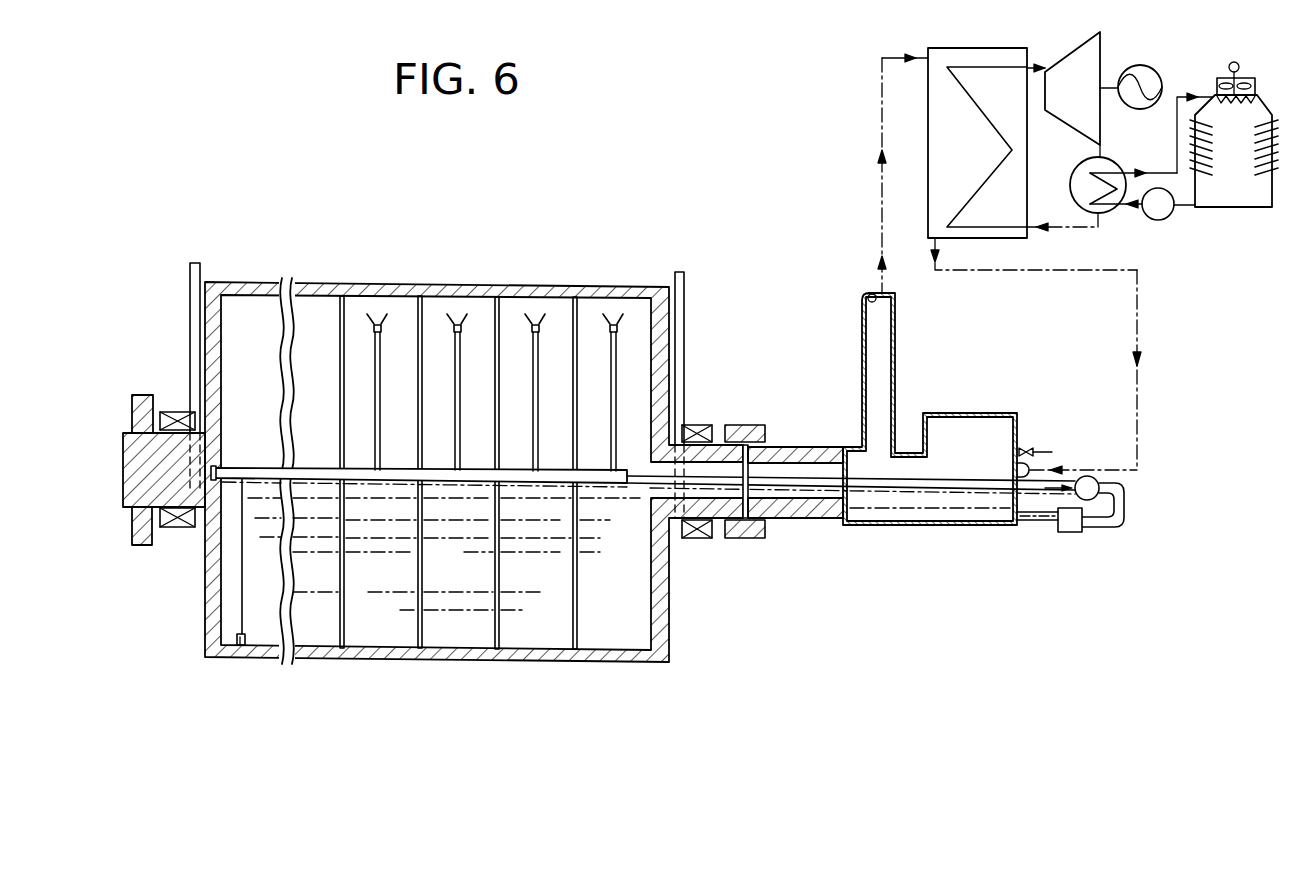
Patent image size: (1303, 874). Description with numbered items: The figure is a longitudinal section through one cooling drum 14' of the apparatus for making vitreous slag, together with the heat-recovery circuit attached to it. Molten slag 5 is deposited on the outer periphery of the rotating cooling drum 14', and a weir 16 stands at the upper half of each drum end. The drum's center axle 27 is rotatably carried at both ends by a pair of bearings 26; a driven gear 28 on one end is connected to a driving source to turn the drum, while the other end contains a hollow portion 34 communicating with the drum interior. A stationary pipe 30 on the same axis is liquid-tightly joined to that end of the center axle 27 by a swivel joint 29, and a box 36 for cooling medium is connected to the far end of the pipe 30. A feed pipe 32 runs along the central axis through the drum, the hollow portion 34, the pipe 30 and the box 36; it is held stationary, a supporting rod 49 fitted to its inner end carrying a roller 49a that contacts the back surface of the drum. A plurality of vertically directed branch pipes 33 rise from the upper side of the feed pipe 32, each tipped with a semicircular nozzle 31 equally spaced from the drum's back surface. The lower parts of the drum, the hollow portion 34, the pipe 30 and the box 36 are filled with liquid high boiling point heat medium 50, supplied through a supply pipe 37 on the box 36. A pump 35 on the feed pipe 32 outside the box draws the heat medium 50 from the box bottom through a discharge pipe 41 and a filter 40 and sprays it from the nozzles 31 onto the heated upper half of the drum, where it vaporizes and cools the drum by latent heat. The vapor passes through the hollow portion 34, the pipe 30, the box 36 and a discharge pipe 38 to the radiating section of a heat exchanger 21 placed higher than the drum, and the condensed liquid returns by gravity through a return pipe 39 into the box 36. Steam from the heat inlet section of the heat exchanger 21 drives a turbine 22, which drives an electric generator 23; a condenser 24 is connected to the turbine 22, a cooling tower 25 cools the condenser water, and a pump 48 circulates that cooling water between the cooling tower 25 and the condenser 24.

The molten slag 5 is at (480, 286).
The cooling drum 14' is at (219, 262).
The weir 16 is at (190, 315).
The heat exchanger 21 is at (988, 48).
The turbine 22 is at (1062, 56).
The electric generator 23 is at (1142, 65).
The condenser 24 is at (1105, 213).
The cooling tower 25 is at (1264, 100).
The bearing 26 is at (177, 528).
The center axle 27 is at (133, 433).
The driven gear 28 is at (136, 546).
The swivel joint 29 is at (751, 424).
The pipe 30 is at (794, 449).
The nozzle 31 is at (382, 329).
The feed pipe 32 is at (311, 468).
The branch pipe 33 is at (381, 400).
The hollow portion 34 is at (698, 470).
The pump 35 is at (1101, 481).
The box 36 is at (963, 412).
The supply pipe 37 is at (1021, 449).
The discharge pipe 38 is at (896, 326).
The return pipe 39 is at (1077, 468).
The filter 40 is at (1069, 533).
The discharge pipe 41 is at (1029, 522).
The pump 48 is at (1160, 221).
The supporting rod 49 is at (240, 612).
The roller 49a is at (233, 646).
The high boiling point heat medium 50 is at (528, 612).